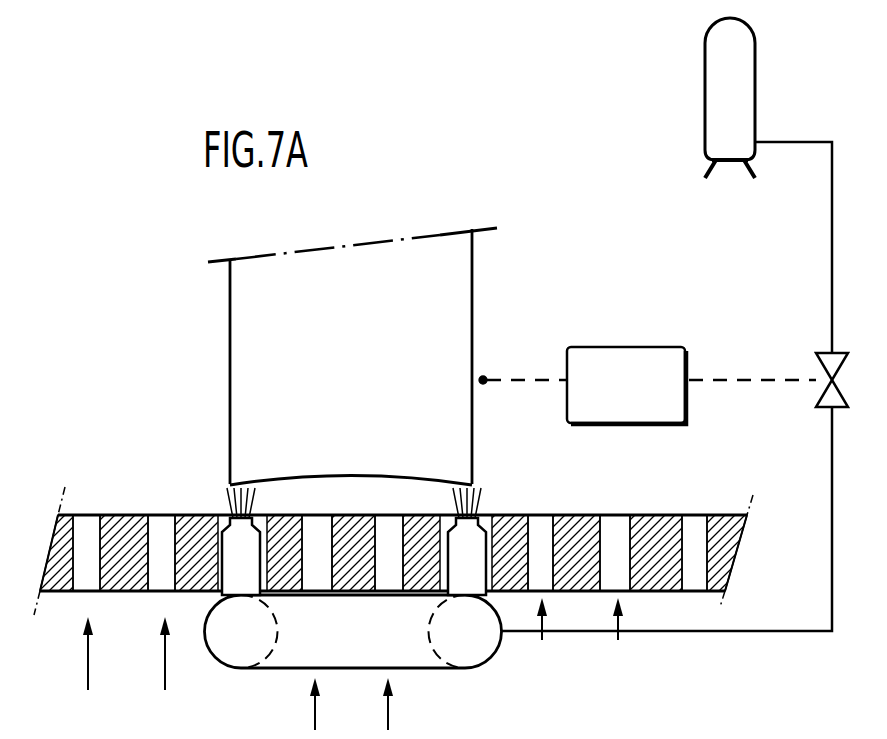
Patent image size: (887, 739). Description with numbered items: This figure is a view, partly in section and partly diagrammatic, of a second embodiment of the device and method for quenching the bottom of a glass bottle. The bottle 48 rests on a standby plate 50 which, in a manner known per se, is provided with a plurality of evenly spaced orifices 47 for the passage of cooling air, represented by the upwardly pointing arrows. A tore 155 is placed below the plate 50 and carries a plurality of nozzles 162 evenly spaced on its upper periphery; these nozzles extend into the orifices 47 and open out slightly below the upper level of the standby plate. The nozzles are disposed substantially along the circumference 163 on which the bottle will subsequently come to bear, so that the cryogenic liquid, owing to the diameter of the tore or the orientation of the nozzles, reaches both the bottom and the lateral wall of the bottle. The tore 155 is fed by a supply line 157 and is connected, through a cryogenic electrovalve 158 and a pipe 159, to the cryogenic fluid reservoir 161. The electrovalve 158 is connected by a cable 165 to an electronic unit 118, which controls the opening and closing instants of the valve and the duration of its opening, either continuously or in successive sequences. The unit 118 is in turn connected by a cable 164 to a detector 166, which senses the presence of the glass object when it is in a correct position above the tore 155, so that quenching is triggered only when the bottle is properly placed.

The orifices 47 is at (90, 528).
The sheet 48 is at (472, 253).
The standby plate 50 is at (652, 520).
The electronic unit 118 is at (647, 358).
The tore 155 is at (472, 668).
The supply line 157 is at (665, 632).
The cryogenic electrovalve 158 is at (815, 365).
The pipe 159 is at (832, 270).
The cryogenic fluid reservoir 161 is at (718, 102).
The nozzles 162 is at (235, 573).
The circumference 163 is at (230, 493).
The cable 164 is at (525, 378).
The cable 165 is at (722, 378).
The detector 166 is at (483, 384).